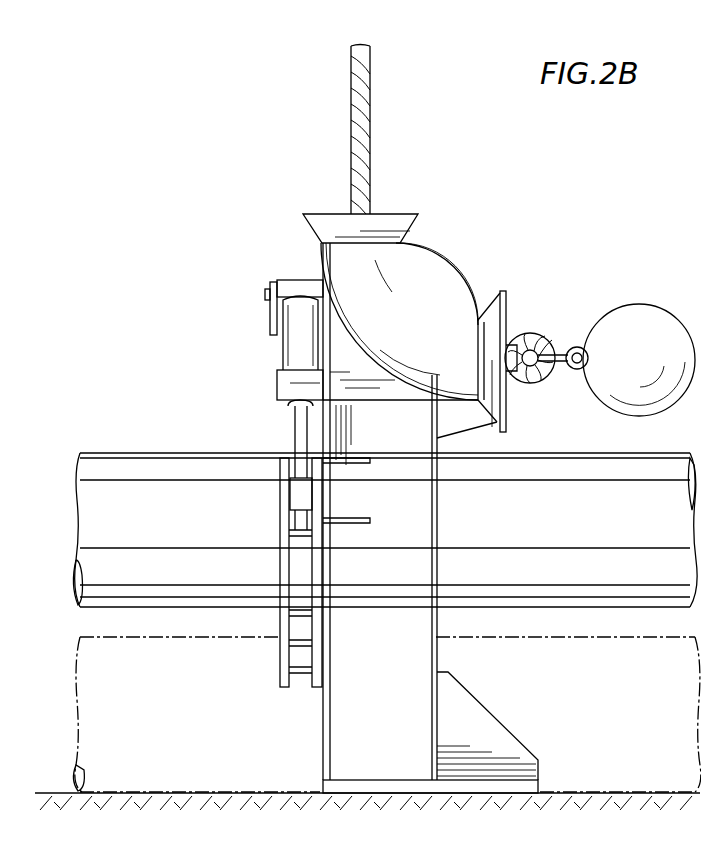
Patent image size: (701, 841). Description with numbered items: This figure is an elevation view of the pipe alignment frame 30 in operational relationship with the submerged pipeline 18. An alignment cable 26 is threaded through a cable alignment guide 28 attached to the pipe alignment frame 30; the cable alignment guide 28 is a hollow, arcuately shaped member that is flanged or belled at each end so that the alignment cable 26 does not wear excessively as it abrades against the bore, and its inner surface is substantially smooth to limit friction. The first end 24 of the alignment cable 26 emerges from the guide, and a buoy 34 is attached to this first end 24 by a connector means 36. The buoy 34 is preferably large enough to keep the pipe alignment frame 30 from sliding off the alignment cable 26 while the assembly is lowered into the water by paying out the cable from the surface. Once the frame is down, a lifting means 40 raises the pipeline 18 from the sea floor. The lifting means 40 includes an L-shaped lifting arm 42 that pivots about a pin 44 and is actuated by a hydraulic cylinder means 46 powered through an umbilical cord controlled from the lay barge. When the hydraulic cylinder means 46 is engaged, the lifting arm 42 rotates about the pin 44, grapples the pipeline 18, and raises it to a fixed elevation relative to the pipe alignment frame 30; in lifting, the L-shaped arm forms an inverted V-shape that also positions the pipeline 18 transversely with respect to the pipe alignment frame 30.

The pipeline 18 is at (126, 452).
The first end of alignment cable 24 is at (520, 332).
The alignment cable 26 is at (372, 91).
The cable alignment guide 28 is at (410, 278).
The pipe alignment frame 30 is at (450, 656).
The buoy 34 is at (650, 305).
The connector means 36 is at (576, 346).
The lifting means 40 is at (268, 377).
The L-shaped lifting arm 42 is at (272, 632).
The pin 44 is at (275, 470).
The hydraulic cylinder means 46 is at (282, 345).